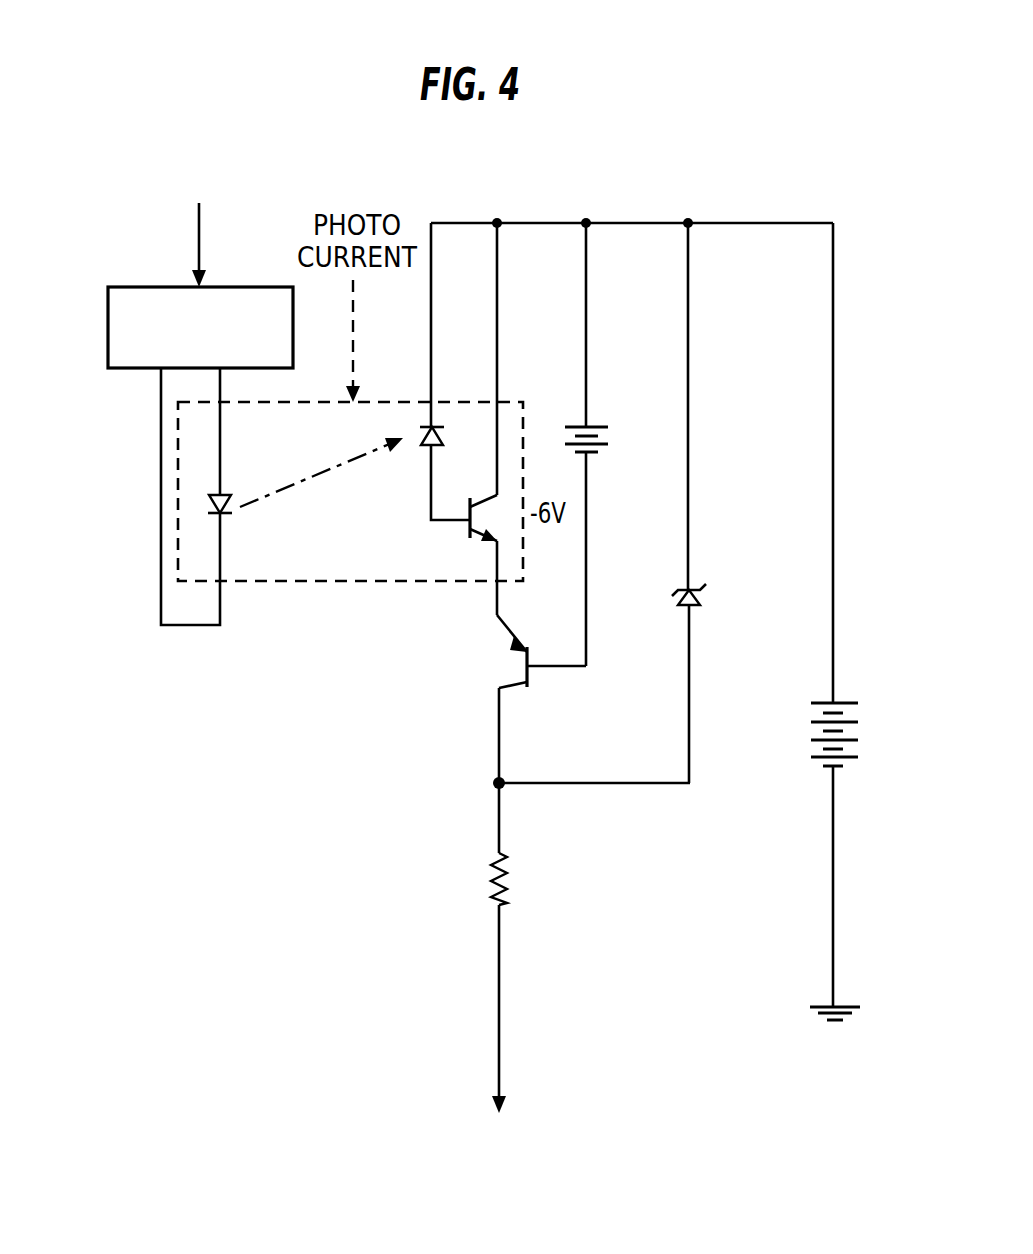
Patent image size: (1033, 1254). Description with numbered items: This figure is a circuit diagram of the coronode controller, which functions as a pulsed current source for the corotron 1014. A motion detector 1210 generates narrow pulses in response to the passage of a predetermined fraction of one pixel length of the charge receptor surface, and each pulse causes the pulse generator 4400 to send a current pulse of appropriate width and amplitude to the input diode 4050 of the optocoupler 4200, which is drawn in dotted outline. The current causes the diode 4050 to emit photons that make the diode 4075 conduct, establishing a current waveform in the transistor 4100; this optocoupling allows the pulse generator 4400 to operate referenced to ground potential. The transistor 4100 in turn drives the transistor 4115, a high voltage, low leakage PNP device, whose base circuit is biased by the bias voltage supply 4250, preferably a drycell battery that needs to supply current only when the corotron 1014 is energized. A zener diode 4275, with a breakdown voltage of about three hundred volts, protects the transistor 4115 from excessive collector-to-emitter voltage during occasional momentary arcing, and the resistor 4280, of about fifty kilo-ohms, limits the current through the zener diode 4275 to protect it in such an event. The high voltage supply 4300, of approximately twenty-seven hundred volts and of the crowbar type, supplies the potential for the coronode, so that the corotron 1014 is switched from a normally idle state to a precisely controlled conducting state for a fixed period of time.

The motion detector 1210 is at (200, 208).
The pulse generator 4400 is at (108, 352).
The input diode 4050 is at (226, 516).
The optocoupler 4200 is at (285, 583).
The diode 4075 is at (423, 444).
The transistor 4100 is at (480, 533).
The transistor 4115 is at (517, 685).
The bias voltage supply 4250 is at (608, 436).
The zener diode 4275 is at (703, 592).
The high voltage supply 4300 is at (887, 685).
The resistor 4280 is at (557, 880).
The corotron 1014 is at (499, 1140).